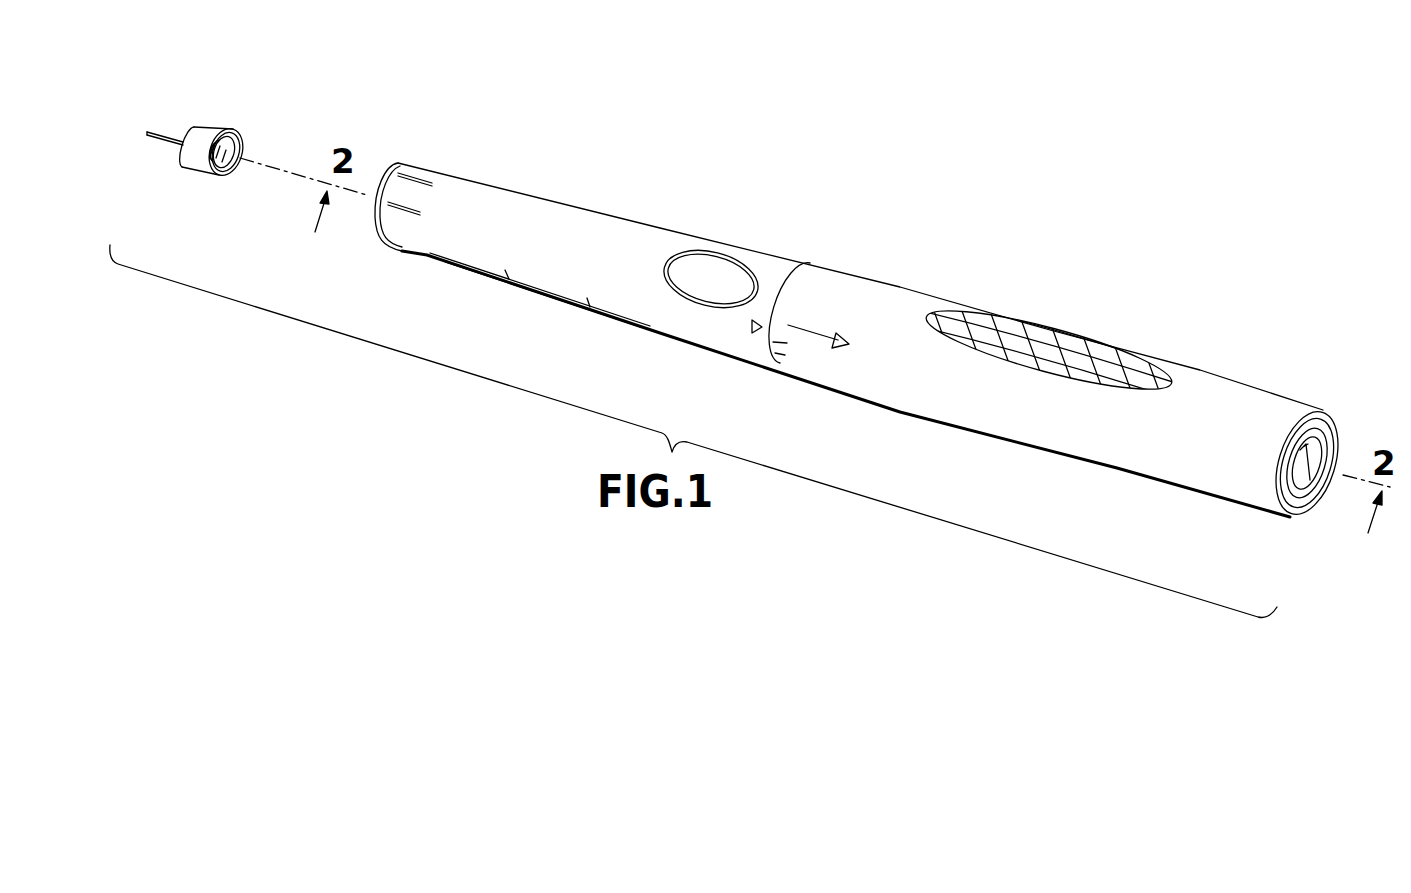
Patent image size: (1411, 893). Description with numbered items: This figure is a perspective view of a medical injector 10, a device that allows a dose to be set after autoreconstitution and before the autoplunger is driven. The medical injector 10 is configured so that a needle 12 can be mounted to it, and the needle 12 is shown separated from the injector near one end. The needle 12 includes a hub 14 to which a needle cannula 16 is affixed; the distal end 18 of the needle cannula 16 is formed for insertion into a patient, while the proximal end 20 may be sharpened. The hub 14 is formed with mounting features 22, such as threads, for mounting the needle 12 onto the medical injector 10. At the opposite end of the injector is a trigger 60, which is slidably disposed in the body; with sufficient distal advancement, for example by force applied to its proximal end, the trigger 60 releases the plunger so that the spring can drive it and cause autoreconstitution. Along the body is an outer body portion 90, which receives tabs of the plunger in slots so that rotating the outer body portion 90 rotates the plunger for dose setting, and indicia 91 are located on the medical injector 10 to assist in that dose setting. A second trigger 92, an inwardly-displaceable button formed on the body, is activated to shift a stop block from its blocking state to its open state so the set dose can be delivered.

The medical injector 10 is at (723, 192).
The needle 12 is at (220, 104).
The hub 14 is at (200, 177).
The needle cannula 16 is at (170, 134).
The distal end 18 is at (146, 134).
The proximal end 20 is at (236, 170).
The mounting features 22 is at (238, 147).
The trigger 60 is at (1310, 490).
The outer body portion 90 is at (935, 299).
The indicia 91 is at (795, 357).
The second trigger 92 is at (722, 287).